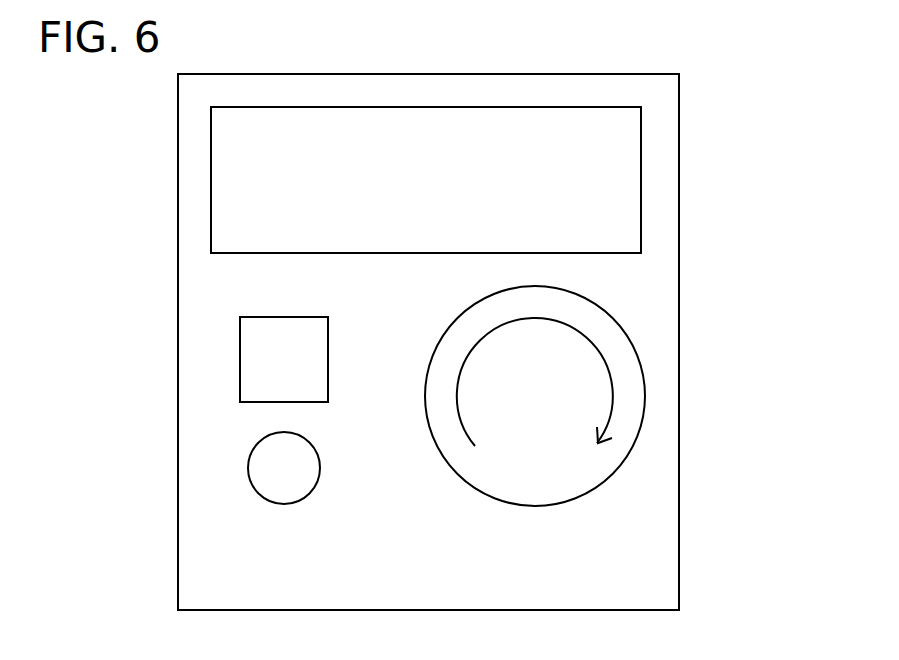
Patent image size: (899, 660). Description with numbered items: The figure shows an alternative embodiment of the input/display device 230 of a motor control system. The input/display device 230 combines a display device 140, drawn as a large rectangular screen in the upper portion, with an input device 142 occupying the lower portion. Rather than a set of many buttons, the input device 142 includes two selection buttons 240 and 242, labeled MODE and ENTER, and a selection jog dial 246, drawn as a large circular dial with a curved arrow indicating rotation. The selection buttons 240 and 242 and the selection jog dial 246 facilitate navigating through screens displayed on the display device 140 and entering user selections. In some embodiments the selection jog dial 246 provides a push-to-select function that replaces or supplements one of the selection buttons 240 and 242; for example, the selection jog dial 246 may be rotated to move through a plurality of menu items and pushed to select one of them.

The input/display device 230 is at (706, 106).
The display device 140 is at (211, 143).
The selection button 240 is at (328, 333).
The selection button 242 is at (313, 443).
The selection jog dial 246 is at (476, 487).
The input device 142 is at (671, 283).